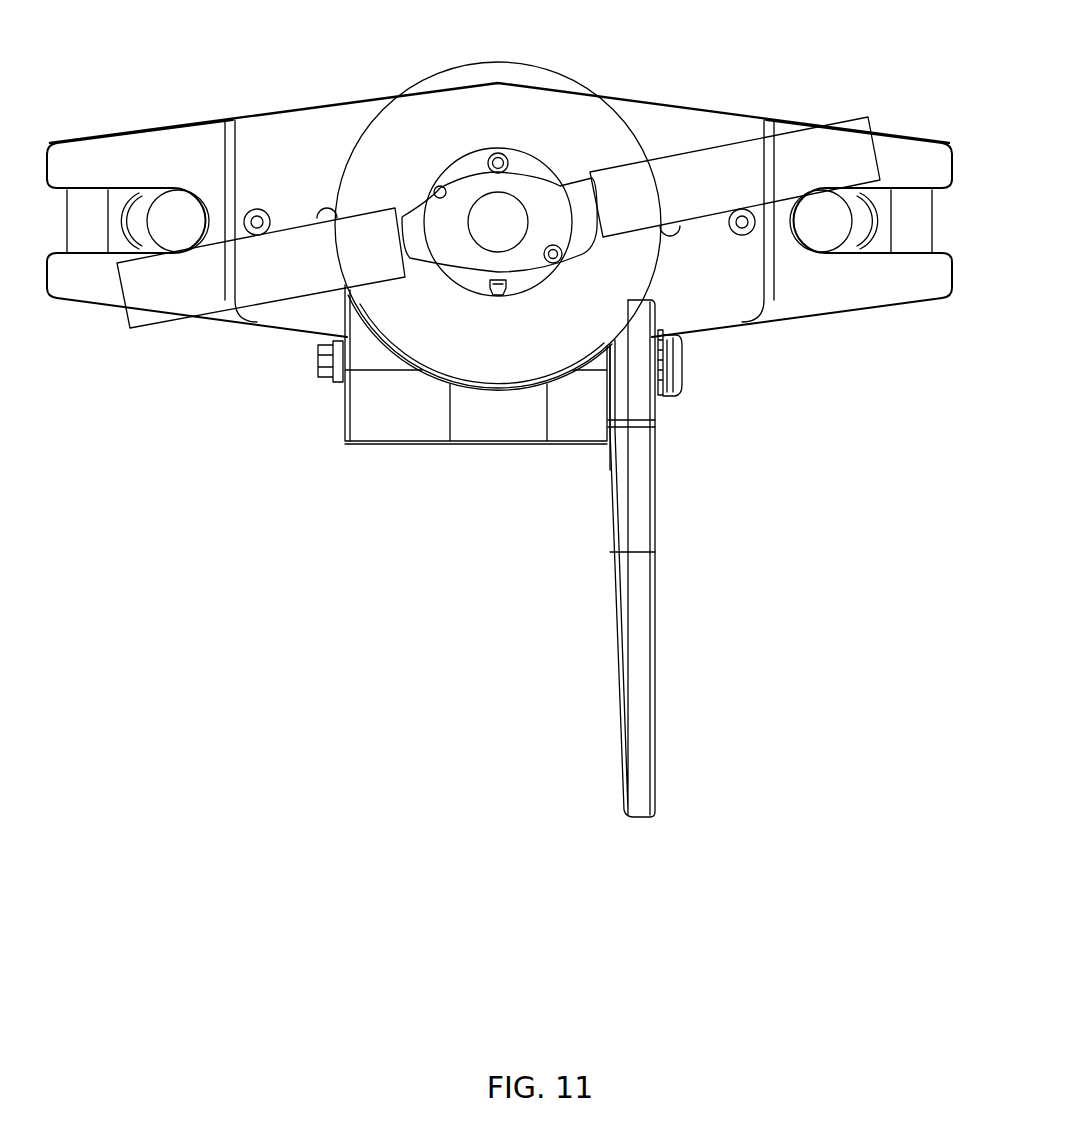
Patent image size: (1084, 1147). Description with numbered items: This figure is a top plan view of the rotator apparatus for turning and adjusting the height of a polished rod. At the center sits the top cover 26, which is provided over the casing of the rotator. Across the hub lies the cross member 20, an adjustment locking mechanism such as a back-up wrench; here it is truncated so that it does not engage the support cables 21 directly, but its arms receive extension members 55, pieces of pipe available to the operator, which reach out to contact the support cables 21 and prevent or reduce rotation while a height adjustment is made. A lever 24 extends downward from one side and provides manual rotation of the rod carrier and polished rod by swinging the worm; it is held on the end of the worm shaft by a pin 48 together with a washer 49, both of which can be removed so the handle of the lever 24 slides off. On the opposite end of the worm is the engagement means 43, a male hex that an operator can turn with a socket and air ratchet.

The cross member 20 is at (538, 198).
The support cables 21 is at (180, 207).
The lever 24 is at (643, 672).
The top cover 26 is at (450, 97).
The engagement means 43 is at (325, 378).
The pin 48 is at (680, 393).
The washer 49 is at (665, 397).
The extension members 55 is at (228, 293).